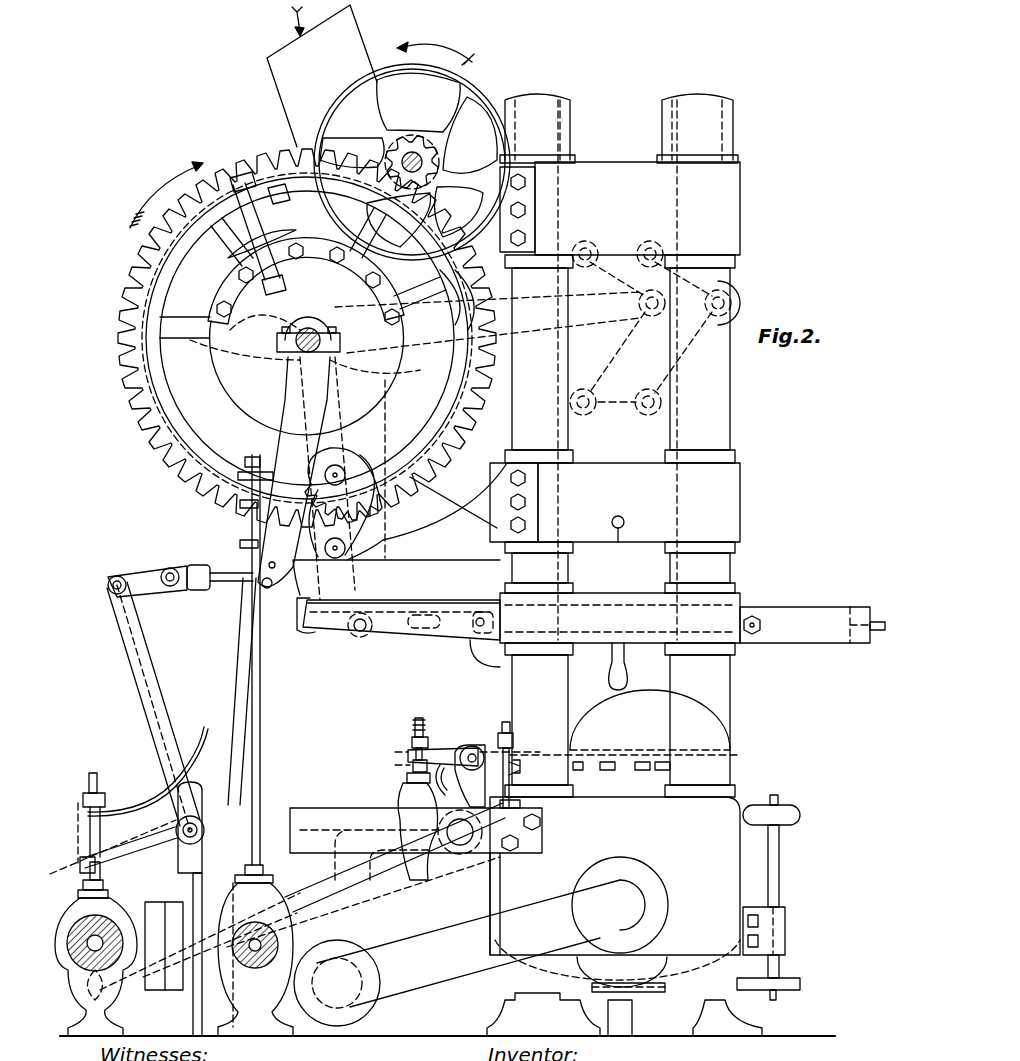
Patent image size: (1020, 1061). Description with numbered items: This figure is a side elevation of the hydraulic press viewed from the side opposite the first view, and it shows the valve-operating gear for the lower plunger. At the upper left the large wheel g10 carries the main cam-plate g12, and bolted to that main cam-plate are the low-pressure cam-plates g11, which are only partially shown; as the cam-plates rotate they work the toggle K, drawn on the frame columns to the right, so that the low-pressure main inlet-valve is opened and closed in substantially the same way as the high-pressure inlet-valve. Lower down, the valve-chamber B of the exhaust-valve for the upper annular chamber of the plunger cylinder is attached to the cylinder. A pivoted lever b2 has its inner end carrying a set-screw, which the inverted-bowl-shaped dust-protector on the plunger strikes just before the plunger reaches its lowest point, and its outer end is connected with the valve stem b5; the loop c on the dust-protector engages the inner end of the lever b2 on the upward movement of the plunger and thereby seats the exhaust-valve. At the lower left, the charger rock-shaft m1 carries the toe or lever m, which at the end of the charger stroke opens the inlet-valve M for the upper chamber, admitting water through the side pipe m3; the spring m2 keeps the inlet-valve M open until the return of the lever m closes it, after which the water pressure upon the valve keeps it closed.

The main gear wheel g10 is at (198, 265).
The low-pressure cam-plates g11 is at (183, 300).
The main cam-plate g12 is at (222, 395).
The toggle K is at (537, 328).
The valve-chamber B is at (400, 795).
The valve stem b5 is at (425, 725).
The lever b2 is at (452, 740).
The loop c is at (505, 780).
The lever m is at (128, 852).
The charger rock-shaft m1 is at (204, 830).
The spring m2 is at (132, 812).
The side pipe m3 is at (362, 878).
The inlet-valve M is at (107, 920).